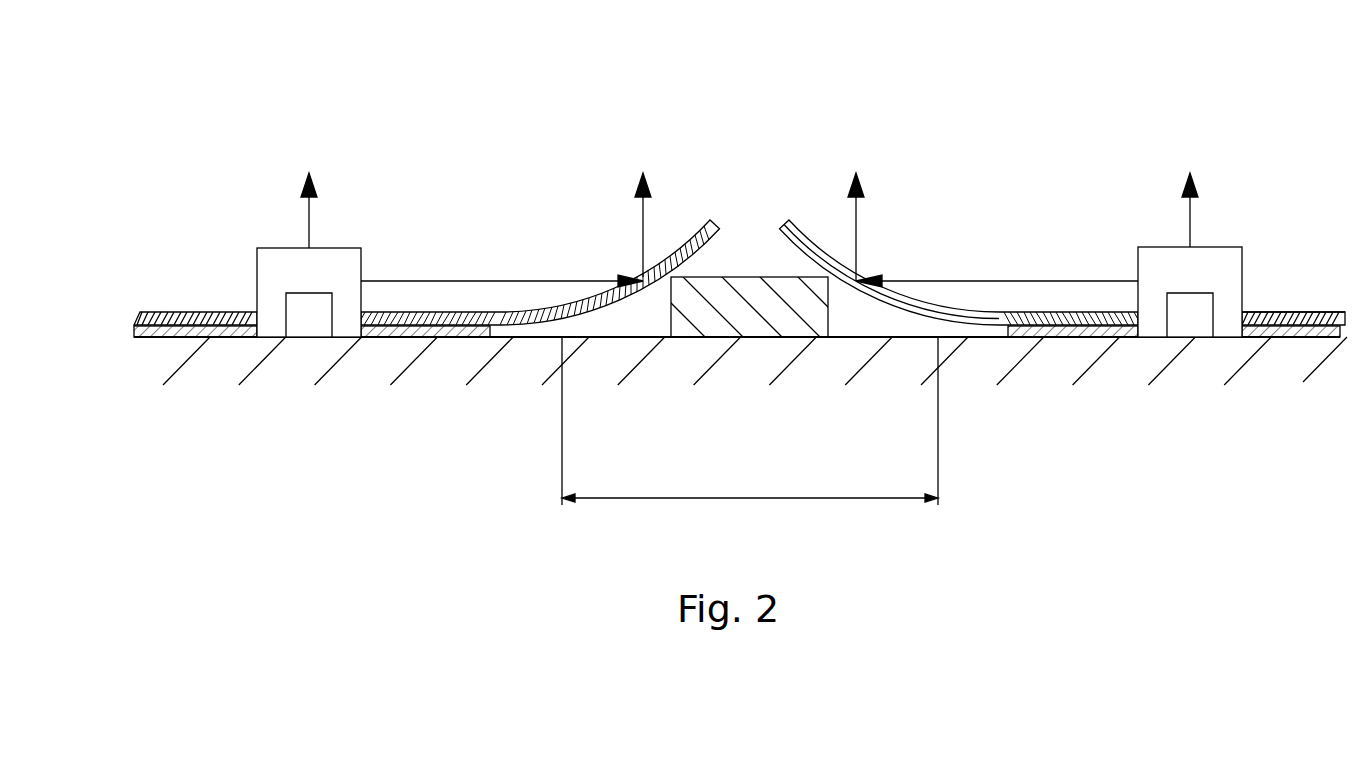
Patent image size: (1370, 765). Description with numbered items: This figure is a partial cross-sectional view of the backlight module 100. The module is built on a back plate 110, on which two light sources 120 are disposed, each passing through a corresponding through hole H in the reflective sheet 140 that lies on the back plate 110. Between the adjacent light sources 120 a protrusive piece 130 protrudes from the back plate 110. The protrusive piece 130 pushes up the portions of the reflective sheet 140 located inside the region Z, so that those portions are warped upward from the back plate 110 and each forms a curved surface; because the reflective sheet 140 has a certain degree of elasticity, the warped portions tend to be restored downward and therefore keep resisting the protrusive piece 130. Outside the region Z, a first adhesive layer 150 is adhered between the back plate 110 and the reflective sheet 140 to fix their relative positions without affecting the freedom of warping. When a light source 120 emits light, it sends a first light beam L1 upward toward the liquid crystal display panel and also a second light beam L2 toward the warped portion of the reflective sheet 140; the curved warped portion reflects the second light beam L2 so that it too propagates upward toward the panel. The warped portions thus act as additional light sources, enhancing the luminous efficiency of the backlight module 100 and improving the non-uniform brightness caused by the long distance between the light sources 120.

The backlight module 100 is at (153, 97).
The back plate 110 is at (1170, 363).
The light source 120 is at (1215, 262).
The protrusive piece 130 is at (747, 320).
The reflective sheet 140 is at (977, 312).
The first adhesive layer 150 is at (450, 340).
The first light beam L1 is at (310, 222).
The second light beam L2 is at (486, 282).
The through hole H is at (1252, 309).
The region Z is at (864, 518).